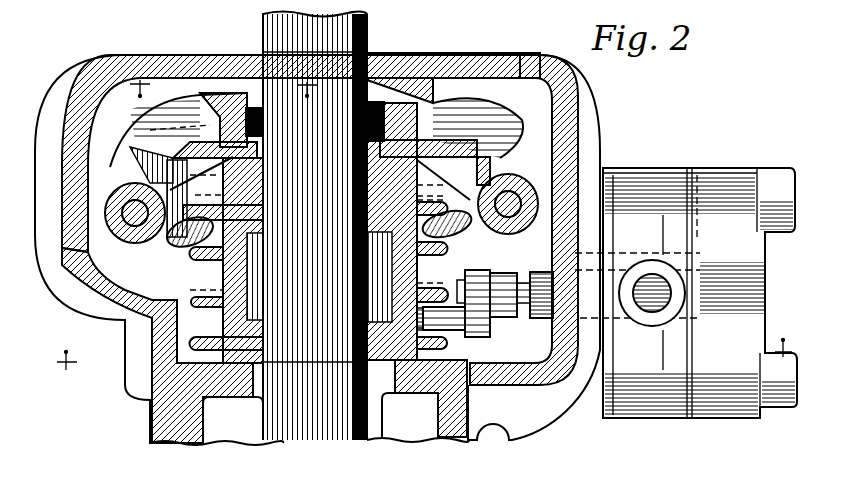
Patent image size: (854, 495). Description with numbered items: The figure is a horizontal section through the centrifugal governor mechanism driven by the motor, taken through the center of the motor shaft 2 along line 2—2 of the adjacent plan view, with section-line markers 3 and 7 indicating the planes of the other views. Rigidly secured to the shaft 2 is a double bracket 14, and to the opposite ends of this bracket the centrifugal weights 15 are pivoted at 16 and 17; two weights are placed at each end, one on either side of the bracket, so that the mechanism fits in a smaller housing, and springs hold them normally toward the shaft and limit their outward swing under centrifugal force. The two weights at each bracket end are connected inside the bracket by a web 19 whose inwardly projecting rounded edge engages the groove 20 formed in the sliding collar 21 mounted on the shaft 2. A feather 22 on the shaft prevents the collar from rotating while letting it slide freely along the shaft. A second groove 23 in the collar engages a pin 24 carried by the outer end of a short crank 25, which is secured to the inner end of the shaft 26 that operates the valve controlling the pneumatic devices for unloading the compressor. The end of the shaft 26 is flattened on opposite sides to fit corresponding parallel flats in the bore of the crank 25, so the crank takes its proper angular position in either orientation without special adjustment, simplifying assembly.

The shaft 2 is at (368, 28).
The section line 3 is at (418, 344).
The section line 7 is at (214, 85).
The double bracket 14 is at (415, 97).
The centrifugal weights 15 is at (185, 183).
The pivot 16 is at (577, 147).
The pivot 17 is at (150, 222).
The web 19 is at (184, 236).
The groove 20 is at (418, 228).
The sliding collar 21 is at (402, 335).
The feather 22 is at (262, 362).
The second groove 23 is at (422, 335).
The pin 24 is at (452, 323).
The short crank 25 is at (482, 313).
The shaft 26 is at (525, 307).